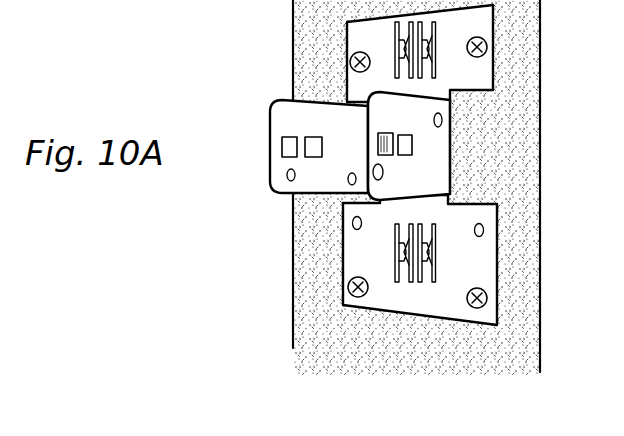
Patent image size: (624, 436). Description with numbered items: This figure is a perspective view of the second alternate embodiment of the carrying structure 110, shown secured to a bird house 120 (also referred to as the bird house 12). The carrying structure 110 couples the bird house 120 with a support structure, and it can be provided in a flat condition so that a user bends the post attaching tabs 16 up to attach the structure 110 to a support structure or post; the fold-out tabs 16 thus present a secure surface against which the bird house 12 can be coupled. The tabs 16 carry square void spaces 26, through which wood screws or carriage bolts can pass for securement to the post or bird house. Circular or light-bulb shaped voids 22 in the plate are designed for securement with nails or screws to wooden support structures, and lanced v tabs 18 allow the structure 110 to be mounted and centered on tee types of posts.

The carrying structure 110 is at (305, 148).
The bird house 12 is at (408, 165).
The post attaching tabs 16 is at (284, 168).
The lanced v tabs 18 is at (396, 34).
The circular or light-bulb shaped voids 22 is at (485, 230).
The square void spaces 26 is at (283, 149).
The bird house 120 is at (320, 315).